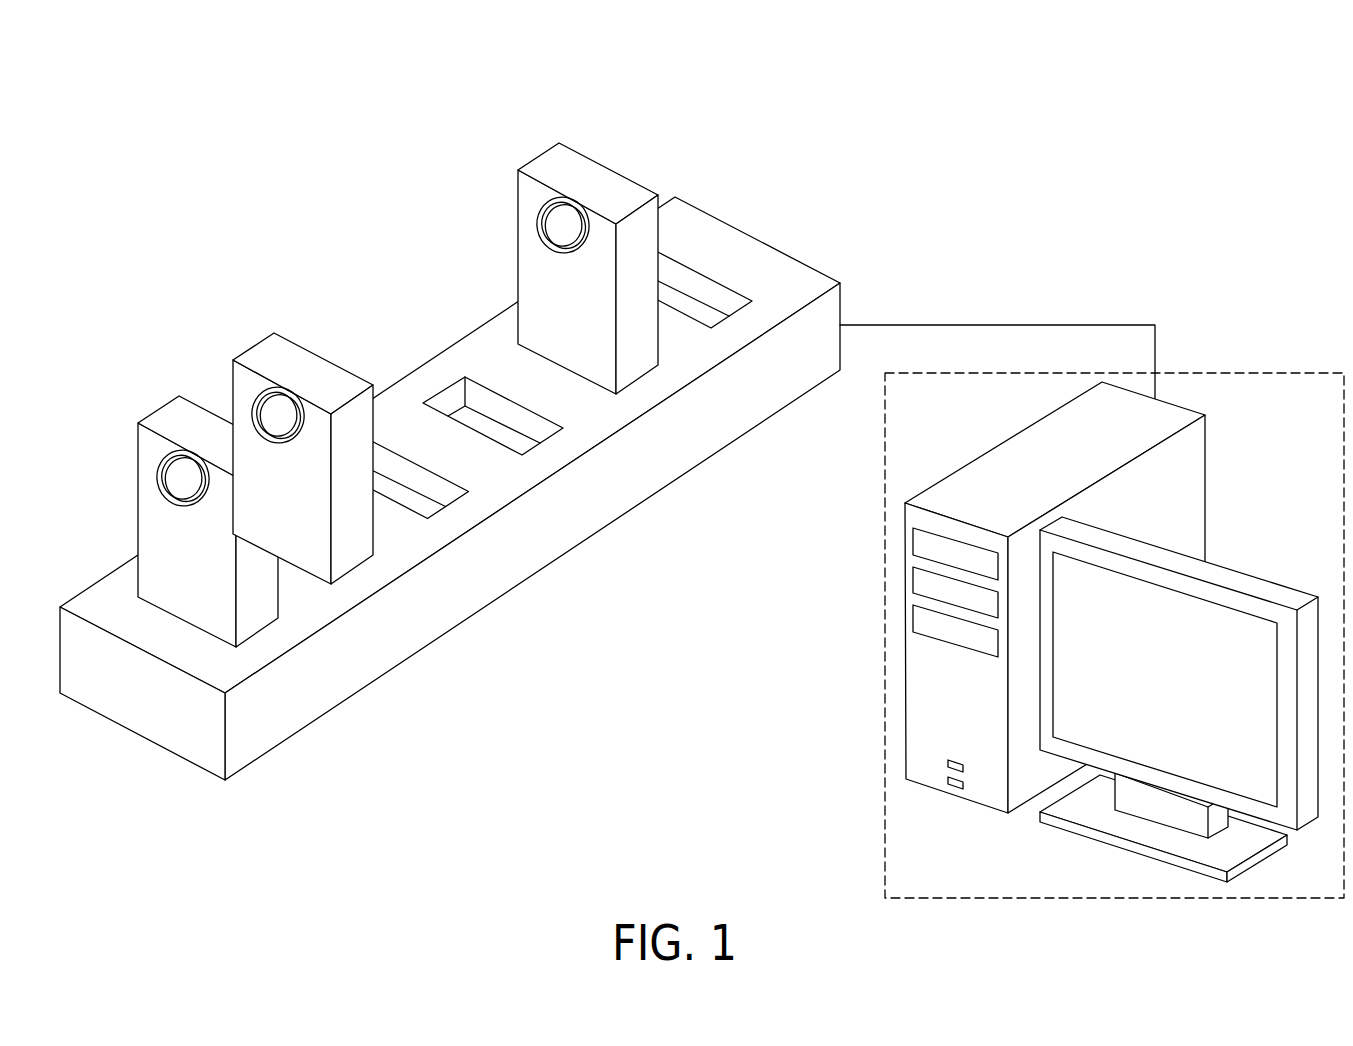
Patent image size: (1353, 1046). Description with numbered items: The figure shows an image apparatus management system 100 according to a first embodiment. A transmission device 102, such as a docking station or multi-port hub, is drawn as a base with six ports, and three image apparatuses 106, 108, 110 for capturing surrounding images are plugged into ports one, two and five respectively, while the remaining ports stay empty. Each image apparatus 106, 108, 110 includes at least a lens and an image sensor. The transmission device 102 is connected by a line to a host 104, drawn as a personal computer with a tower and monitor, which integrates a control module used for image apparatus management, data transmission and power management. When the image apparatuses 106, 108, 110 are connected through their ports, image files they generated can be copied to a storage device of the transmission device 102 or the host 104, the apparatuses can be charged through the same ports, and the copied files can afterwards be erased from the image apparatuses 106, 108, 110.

The image apparatus management system 100 is at (702, 468).
The transmission device 102 is at (98, 597).
The host 104 is at (885, 693).
The image apparatus 106 is at (172, 417).
The image apparatus 108 is at (265, 353).
The image apparatus 110 is at (552, 162).